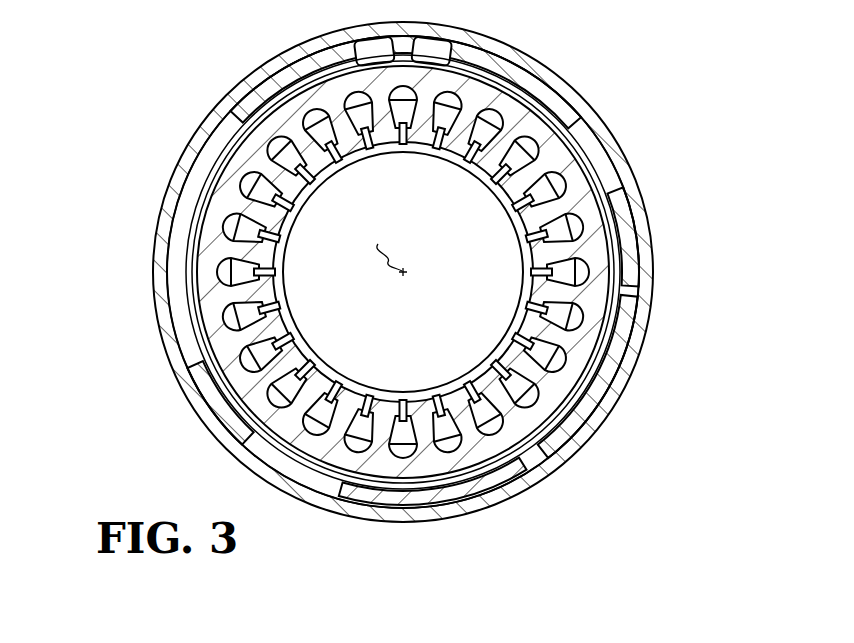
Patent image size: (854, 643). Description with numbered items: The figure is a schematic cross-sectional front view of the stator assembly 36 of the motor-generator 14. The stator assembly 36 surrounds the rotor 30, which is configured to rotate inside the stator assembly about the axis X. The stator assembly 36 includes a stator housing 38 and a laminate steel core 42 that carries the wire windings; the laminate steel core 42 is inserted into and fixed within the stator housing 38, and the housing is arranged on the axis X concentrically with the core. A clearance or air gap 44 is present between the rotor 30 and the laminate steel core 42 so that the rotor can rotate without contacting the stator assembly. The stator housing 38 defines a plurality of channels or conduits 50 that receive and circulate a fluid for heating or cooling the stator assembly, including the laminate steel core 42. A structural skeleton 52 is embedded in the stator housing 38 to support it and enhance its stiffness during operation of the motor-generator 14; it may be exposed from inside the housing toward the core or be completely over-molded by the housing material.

The motor-generator 14 is at (133, 91).
The rotor 30 is at (414, 333).
The stator assembly 36 is at (650, 184).
The stator housing 38 is at (640, 355).
The laminate steel core 42 is at (514, 444).
The air gap 44 is at (520, 180).
The conduits 50 is at (220, 417).
The structural skeleton 52 is at (186, 377).